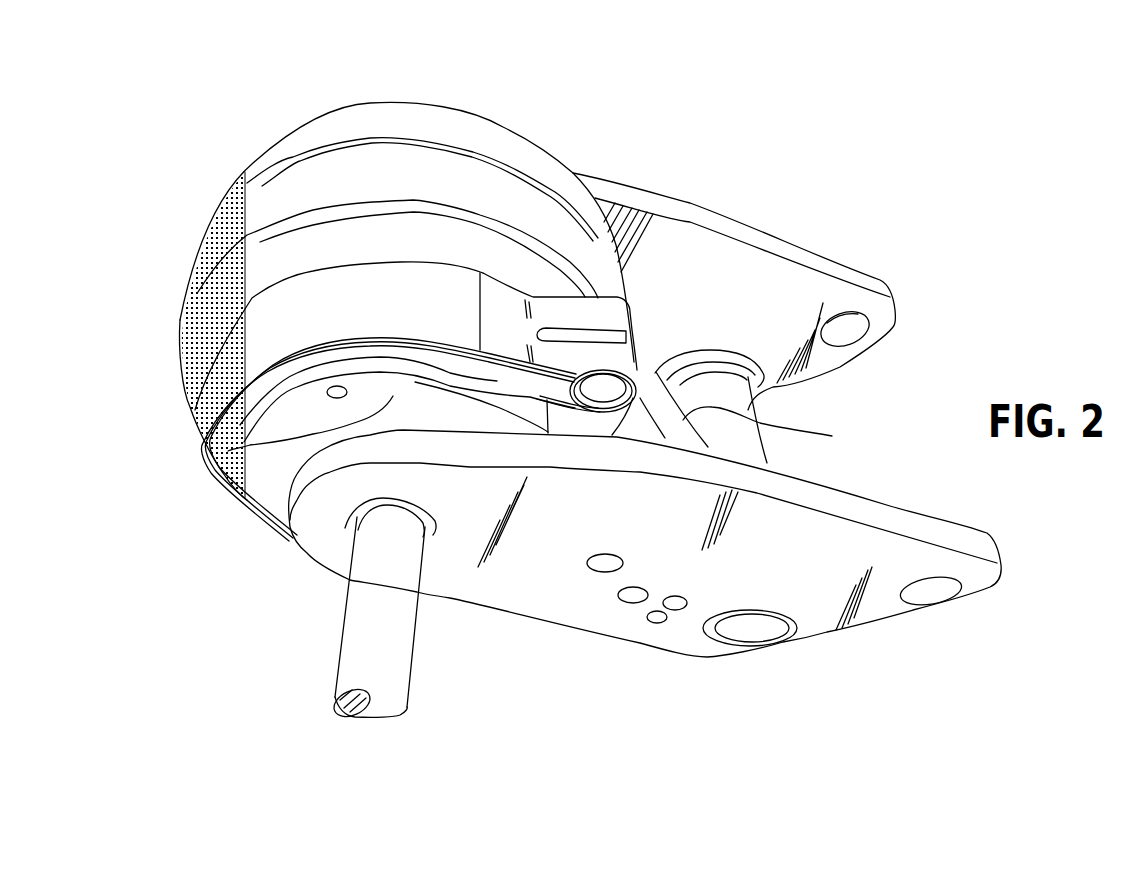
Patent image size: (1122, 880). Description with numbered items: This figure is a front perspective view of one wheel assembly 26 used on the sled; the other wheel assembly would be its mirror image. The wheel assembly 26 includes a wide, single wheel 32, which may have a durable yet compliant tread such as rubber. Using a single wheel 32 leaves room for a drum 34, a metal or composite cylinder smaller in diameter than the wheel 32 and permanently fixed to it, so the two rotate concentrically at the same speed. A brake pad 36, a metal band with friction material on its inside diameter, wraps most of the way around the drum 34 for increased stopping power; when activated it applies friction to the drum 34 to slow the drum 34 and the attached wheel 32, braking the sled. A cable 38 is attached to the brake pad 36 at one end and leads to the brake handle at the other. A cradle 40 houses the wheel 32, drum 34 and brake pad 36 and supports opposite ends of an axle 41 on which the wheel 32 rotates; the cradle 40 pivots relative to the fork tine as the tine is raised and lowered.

The wheel assembly 26 is at (577, 109).
The wheel 32 is at (285, 188).
The drum 34 is at (236, 462).
The brake pad 36 is at (352, 293).
The cable 38 is at (770, 425).
The cradle 40 is at (725, 278).
The axle 41 is at (420, 642).